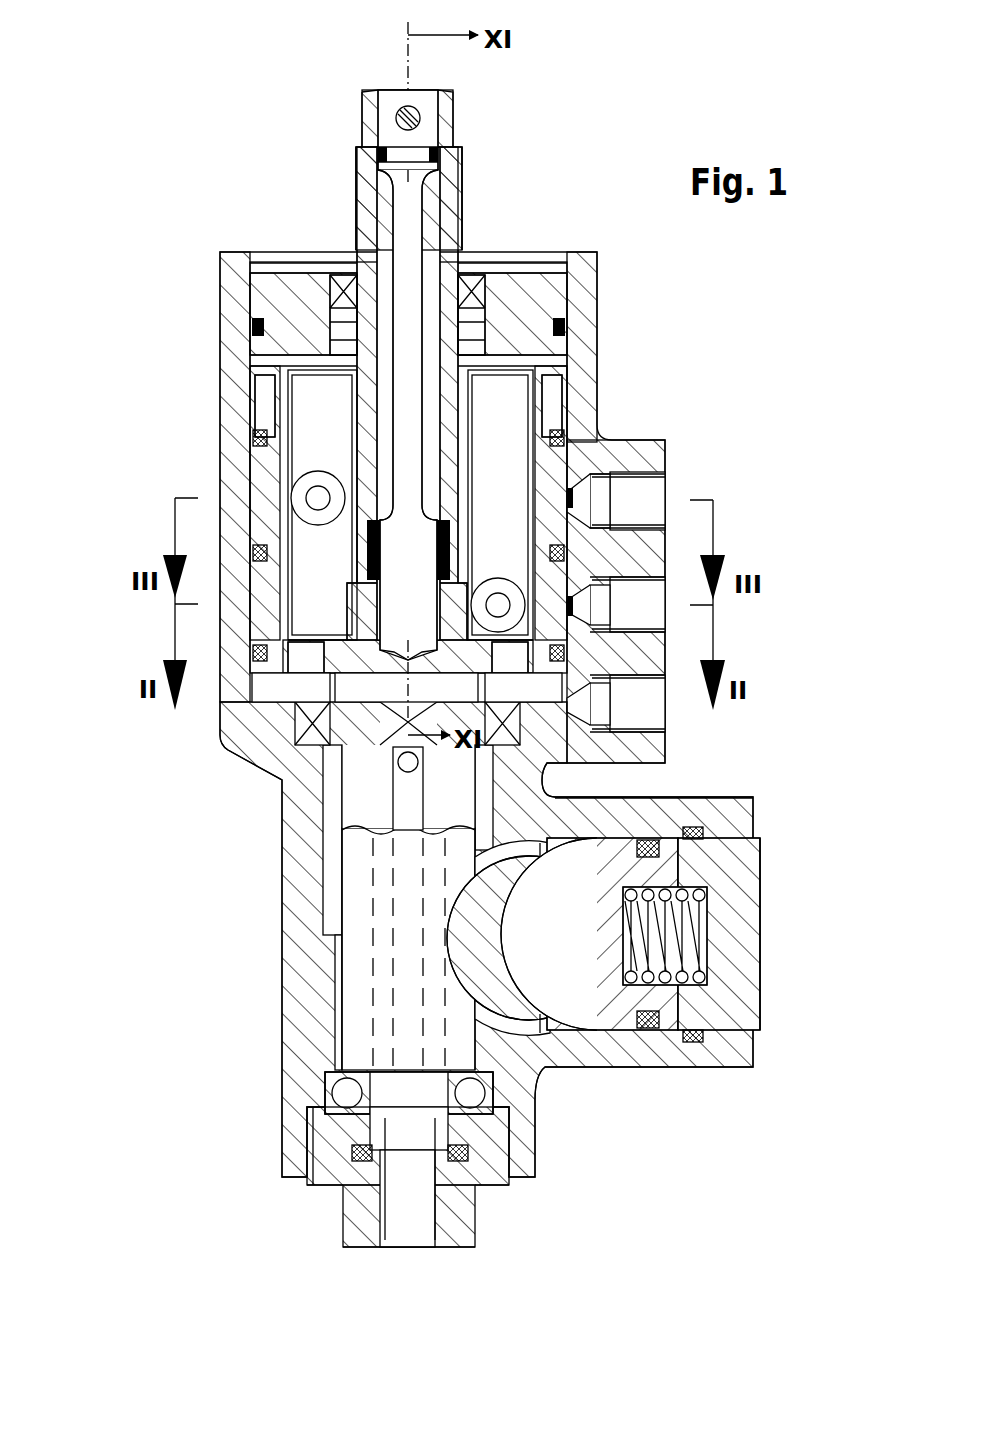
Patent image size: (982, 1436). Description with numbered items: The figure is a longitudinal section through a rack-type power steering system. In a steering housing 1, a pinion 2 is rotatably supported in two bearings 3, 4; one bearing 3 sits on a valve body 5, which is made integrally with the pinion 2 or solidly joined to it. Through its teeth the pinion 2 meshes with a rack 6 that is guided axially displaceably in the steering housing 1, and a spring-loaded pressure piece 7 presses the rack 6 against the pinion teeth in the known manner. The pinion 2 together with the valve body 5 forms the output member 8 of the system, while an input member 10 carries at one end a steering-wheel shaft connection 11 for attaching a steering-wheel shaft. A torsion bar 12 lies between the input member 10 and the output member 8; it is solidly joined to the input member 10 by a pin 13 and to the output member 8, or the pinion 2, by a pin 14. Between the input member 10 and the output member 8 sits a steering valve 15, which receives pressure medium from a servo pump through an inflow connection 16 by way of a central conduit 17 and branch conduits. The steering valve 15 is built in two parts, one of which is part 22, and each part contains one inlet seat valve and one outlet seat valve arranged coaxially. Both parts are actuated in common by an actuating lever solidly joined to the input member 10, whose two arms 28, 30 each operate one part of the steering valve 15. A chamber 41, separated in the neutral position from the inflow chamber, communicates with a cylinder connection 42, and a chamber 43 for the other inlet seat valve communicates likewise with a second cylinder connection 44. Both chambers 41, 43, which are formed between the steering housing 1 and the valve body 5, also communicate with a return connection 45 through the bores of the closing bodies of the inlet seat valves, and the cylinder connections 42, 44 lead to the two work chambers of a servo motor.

The steering housing 1 is at (232, 283).
The pinion 2 is at (368, 775).
The bearing 3 is at (262, 395).
The bearing 4 is at (347, 1093).
The valve body 5 is at (266, 462).
The rack 6 is at (495, 965).
The spring-loaded pressure piece 7 is at (667, 1022).
The output member 8 is at (218, 753).
The input member 10 is at (450, 410).
The steering-wheel shaft connection 11 is at (377, 128).
The torsion bar 12 is at (410, 243).
The pin 13 is at (415, 122).
The pin 14 is at (677, 843).
The steering valve 15 is at (260, 511).
The inflow connection 16 is at (408, 1208).
The central conduit 17 is at (408, 792).
The part of the steering valve 22 is at (318, 500).
The arm 28 is at (497, 492).
The arm 30 is at (313, 550).
The chamber 41 is at (713, 633).
The cylinder connection 42 is at (640, 487).
The chamber 43 is at (640, 685).
The second cylinder connection 44 is at (642, 603).
The return connection 45 is at (595, 625).